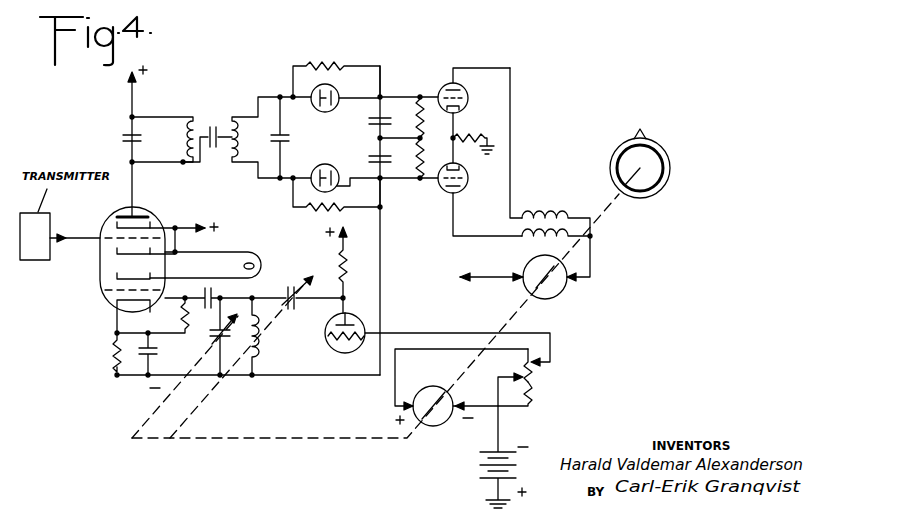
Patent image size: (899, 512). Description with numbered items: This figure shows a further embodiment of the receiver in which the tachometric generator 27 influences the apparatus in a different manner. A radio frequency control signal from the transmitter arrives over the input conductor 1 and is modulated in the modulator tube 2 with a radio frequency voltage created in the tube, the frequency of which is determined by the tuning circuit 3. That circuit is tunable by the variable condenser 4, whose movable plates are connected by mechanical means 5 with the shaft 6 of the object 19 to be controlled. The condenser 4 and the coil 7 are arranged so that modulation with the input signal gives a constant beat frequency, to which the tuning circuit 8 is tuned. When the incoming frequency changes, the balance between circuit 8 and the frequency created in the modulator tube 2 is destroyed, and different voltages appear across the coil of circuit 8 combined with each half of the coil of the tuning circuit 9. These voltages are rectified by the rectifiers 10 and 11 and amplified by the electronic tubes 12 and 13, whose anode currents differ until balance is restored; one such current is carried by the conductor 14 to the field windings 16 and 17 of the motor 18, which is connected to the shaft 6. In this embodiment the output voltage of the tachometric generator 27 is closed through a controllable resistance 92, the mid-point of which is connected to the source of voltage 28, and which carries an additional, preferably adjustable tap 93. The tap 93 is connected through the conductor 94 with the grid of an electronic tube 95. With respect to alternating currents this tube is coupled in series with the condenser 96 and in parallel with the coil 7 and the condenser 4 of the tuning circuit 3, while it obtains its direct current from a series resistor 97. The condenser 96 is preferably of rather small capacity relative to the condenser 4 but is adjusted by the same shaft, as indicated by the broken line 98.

The input conductor 1 is at (83, 236).
The modulator tube 2 is at (113, 207).
The tuning circuit 3 is at (208, 301).
The variable condenser 4 is at (212, 338).
The mechanical means 5 is at (151, 411).
The shaft 6 is at (507, 315).
The coil 7 is at (258, 346).
The tuning circuit 8 is at (160, 125).
The tuning circuit 9 is at (252, 122).
The rectifier 10 is at (328, 117).
The rectifier 11 is at (327, 166).
The electronic tube 12 is at (446, 82).
The electronic tube 13 is at (446, 193).
The conductor 14 is at (512, 118).
The field winding 16 is at (548, 212).
The field winding 17 is at (531, 243).
The motor 18 is at (566, 296).
The object to be controlled 19 is at (624, 150).
The tachometric generator 27 is at (436, 427).
The source of voltage 28 is at (480, 470).
The controllable resistance 92 is at (538, 399).
The adjustable tap 93 is at (540, 362).
The conductor 94 is at (431, 333).
The electronic tube 95 is at (325, 332).
The condenser 96 is at (286, 291).
The series resistor 97 is at (348, 276).
The broken line 98 is at (197, 418).